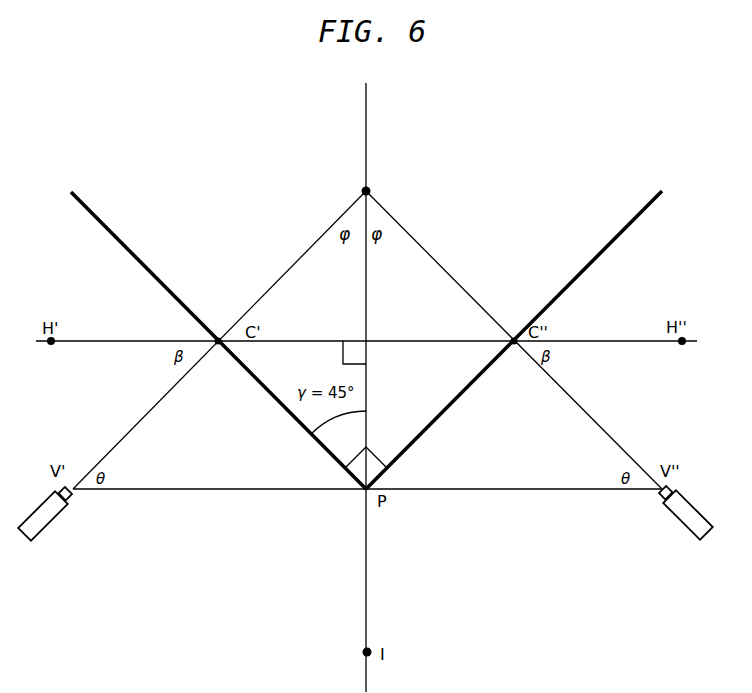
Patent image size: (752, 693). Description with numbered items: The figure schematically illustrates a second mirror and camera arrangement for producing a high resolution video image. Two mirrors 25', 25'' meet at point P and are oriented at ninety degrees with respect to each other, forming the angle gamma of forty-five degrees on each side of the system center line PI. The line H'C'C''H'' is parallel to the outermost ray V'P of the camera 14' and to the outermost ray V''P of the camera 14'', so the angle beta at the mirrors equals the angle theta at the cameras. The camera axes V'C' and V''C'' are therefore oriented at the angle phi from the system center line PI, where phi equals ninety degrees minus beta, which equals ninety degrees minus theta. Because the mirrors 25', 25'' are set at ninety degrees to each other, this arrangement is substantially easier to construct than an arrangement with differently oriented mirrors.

The camera 14' is at (60, 514).
The camera 14'' is at (666, 513).
The mirror 25' is at (218, 340).
The mirror 25'' is at (514, 340).